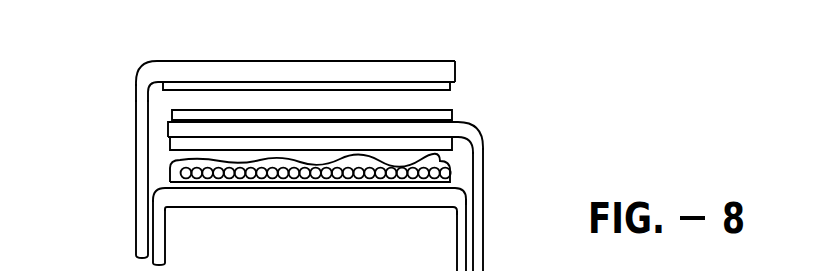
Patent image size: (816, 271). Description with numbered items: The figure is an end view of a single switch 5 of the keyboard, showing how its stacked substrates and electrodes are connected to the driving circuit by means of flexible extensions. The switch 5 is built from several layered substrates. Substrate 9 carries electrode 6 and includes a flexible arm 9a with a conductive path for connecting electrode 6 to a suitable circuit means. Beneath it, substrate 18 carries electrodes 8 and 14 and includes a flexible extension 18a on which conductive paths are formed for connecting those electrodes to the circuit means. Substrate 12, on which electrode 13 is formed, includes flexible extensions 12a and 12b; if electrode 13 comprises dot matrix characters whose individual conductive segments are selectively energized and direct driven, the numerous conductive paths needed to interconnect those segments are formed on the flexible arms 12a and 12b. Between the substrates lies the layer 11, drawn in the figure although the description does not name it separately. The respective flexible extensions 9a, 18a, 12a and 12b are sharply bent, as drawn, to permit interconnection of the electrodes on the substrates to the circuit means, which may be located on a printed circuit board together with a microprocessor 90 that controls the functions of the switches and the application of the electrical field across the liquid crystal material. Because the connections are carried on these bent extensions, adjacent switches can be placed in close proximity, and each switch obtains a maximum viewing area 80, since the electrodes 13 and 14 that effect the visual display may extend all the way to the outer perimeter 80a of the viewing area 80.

The switch 5 is at (186, 42).
The viewing area 80 is at (283, 42).
The outer perimeter 80a is at (157, 61).
The substrate 9 is at (353, 68).
The flexible arm 9a is at (143, 238).
The electrode 6 is at (166, 88).
The electrode 8 is at (170, 112).
The substrate 18 is at (168, 131).
The flexible extension 18a is at (483, 182).
The electrode 14 is at (178, 144).
The fabric layer 11 is at (173, 173).
The electrode 13 is at (446, 178).
The substrate 12 is at (347, 197).
The flexible extension 12a is at (160, 238).
The flexible extension 12b is at (458, 249).
The microprocessor 90 is at (306, 268).